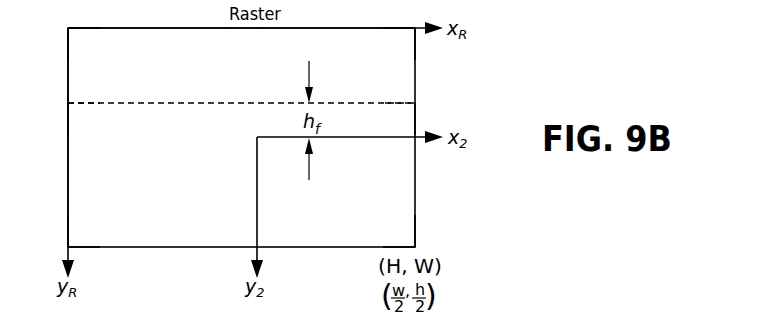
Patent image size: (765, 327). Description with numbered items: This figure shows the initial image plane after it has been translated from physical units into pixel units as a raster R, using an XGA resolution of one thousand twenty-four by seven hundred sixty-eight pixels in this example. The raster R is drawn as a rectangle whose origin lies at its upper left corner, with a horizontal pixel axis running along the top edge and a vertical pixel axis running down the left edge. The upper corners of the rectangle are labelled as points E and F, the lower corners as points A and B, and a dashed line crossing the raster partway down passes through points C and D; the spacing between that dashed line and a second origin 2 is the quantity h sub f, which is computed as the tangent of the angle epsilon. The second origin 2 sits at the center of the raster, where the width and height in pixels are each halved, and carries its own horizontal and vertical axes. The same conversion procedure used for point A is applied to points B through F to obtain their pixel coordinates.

The second coordinate frame (sub-image region) 2 is at (347, 204).
The raster origin R is at (65, 23).
The point A is at (84, 231).
The point B is at (399, 231).
The point C is at (84, 119).
The point D is at (400, 119).
The point E is at (84, 44).
The point F is at (399, 44).